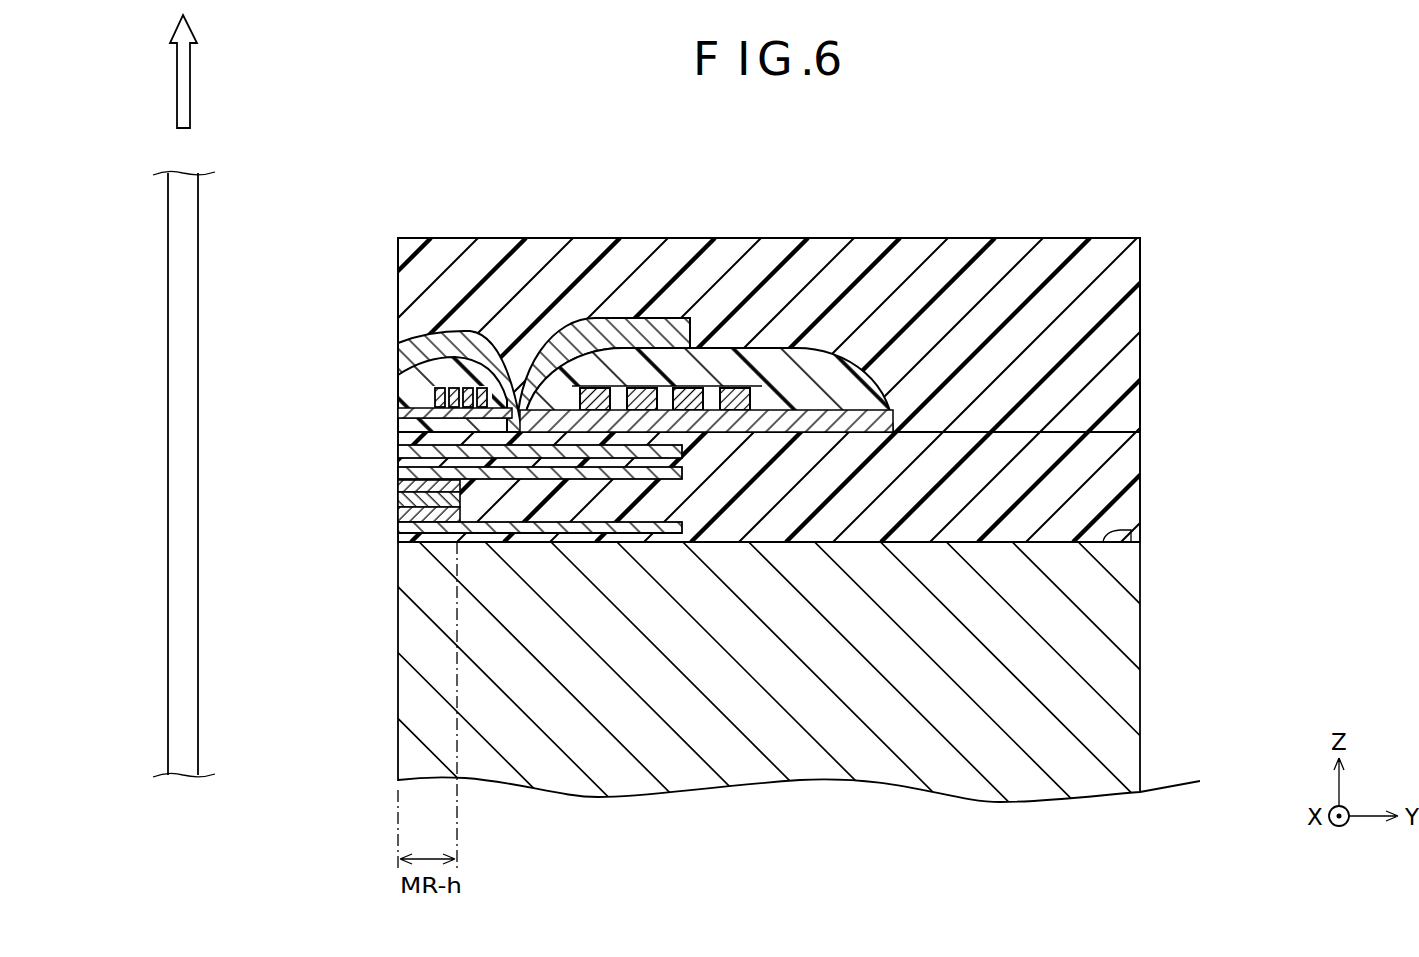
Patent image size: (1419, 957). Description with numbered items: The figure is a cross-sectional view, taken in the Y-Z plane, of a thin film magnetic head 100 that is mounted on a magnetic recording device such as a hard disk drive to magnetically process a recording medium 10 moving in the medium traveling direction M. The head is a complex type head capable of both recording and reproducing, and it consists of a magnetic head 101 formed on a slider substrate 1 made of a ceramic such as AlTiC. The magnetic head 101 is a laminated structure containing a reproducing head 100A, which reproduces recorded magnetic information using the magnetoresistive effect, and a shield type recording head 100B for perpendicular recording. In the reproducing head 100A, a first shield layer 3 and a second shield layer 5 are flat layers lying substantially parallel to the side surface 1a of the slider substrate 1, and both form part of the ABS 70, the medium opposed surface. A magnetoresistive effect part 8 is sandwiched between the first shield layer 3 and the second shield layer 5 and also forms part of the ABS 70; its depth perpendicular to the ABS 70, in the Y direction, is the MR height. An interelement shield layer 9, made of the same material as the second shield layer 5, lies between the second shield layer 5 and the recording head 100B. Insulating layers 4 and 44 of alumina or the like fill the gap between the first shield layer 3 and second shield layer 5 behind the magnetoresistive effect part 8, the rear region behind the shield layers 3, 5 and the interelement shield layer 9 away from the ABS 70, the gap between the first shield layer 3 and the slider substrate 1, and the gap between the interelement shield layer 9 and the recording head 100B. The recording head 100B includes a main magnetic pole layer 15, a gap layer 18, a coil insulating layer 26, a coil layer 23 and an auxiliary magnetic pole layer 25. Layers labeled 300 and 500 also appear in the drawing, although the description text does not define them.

The slider substrate 1 is at (1133, 648).
The side surface of the slider substrate 1a is at (1122, 537).
The first shield layer 3 is at (398, 534).
The insulating layer 4 is at (1133, 500).
The second shield layer 5 is at (398, 480).
The magnetoresistive effect (MR) part 8 is at (395, 505).
The interelement shield layer 9 is at (398, 455).
The recording medium 10 is at (168, 647).
The main magnetic pole layer 15 is at (398, 430).
The gap layer 18 is at (398, 416).
The coil layer 23 is at (398, 398).
The auxiliary magnetic pole layer 25 is at (398, 355).
The coil insulating layer 26 is at (398, 385).
The insulating layer 44 is at (1133, 302).
The ABS 70 is at (383, 598).
The thin film magnetic head 100 is at (1172, 350).
The magnetic head 101 is at (1243, 468).
The reproducing head 100A is at (305, 475).
The recording head 100B is at (305, 293).
The shield sub-layer 300 is at (398, 522).
The shield sub-layer 500 is at (398, 493).
The medium traveling direction M is at (186, 86).